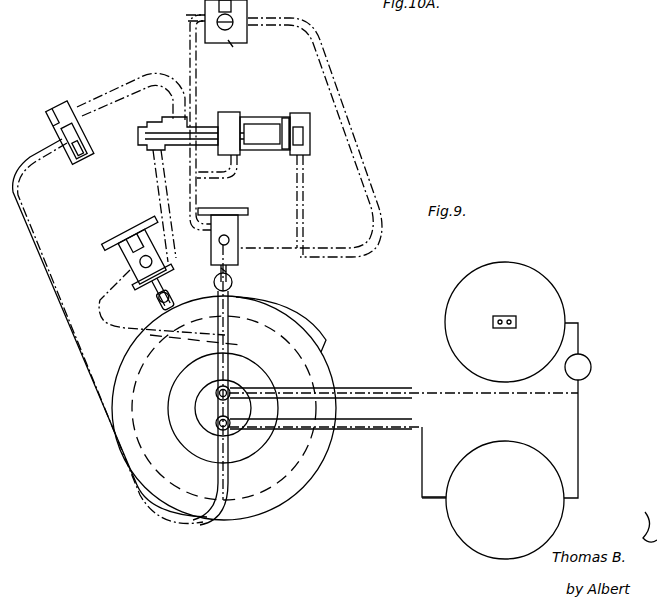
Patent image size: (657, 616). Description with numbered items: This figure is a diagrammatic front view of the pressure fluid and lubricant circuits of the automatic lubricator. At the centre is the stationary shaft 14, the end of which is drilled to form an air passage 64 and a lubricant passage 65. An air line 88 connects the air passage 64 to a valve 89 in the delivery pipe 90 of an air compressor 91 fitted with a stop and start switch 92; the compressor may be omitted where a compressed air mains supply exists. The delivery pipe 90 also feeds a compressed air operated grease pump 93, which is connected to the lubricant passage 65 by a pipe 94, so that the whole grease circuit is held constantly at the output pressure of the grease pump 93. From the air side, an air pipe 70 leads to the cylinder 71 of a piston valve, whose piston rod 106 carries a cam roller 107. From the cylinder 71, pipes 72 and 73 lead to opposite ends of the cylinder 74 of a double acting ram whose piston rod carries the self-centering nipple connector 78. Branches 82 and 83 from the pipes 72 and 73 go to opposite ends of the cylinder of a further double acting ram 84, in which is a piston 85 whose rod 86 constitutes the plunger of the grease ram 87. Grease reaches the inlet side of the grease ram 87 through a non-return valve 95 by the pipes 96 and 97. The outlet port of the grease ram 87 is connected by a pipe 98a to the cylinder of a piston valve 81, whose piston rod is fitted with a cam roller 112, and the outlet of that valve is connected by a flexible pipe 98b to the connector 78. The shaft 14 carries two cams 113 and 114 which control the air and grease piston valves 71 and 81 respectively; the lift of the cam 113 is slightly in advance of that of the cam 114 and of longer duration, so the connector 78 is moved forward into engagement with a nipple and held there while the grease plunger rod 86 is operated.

The stationary shaft 14 is at (178, 403).
The air passage 64 is at (216, 390).
The lubricant passage 65 is at (216, 425).
The air pipe 70 is at (228, 333).
The cylinder of piston valve 71 is at (236, 227).
The pipe 72 is at (374, 178).
The pipe 73 is at (198, 81).
The cylinder of double acting ram 74 is at (233, 47).
The self-centering nipple connector 78 is at (248, 8).
The piston valve 81 is at (126, 238).
The branch 82 is at (305, 204).
The branch 83 is at (200, 181).
The double acting ram 84 is at (300, 138).
The piston 85 is at (284, 124).
The rod 86 is at (266, 133).
The grease ram 87 is at (138, 137).
The air line 88 is at (393, 393).
The valve 89 is at (568, 370).
The delivery pipe 90 is at (573, 323).
The air compressor 91 is at (498, 276).
The stop and start switch 92 is at (500, 331).
The grease pump 93 is at (493, 500).
The pipe 94 is at (372, 430).
The non-return valve 95 is at (52, 118).
The pipe 96 is at (35, 215).
The pipe 97 is at (110, 86).
The pipe 98a is at (163, 198).
The flexible pipe 98b is at (110, 282).
The piston rod 106 is at (228, 272).
The cam roller 107 is at (233, 285).
The cam roller 112 is at (170, 297).
The cam 113 is at (322, 340).
The cam 114 is at (268, 302).